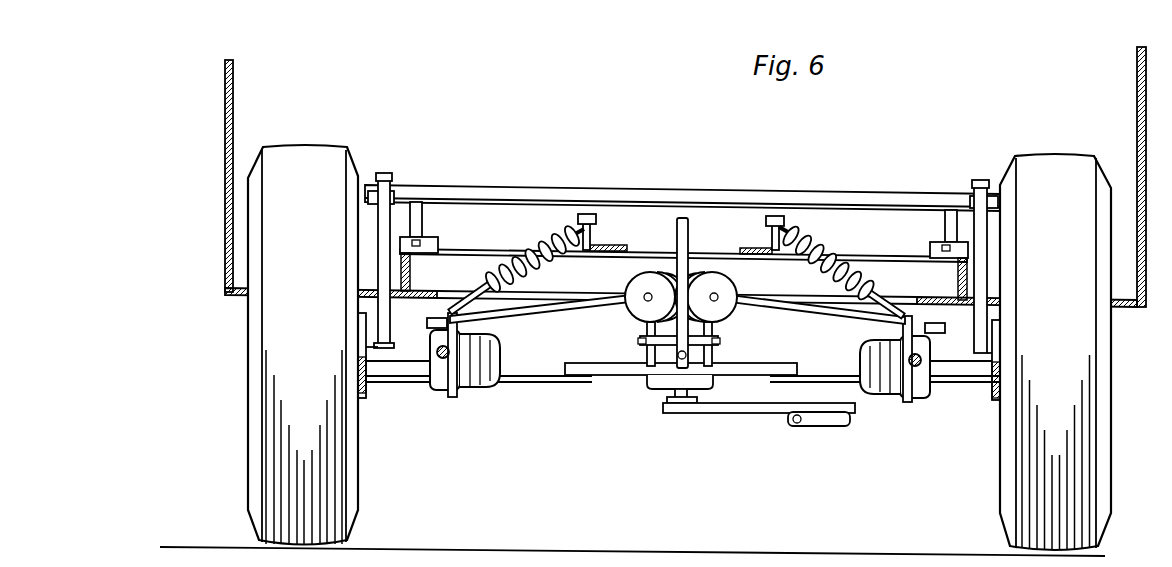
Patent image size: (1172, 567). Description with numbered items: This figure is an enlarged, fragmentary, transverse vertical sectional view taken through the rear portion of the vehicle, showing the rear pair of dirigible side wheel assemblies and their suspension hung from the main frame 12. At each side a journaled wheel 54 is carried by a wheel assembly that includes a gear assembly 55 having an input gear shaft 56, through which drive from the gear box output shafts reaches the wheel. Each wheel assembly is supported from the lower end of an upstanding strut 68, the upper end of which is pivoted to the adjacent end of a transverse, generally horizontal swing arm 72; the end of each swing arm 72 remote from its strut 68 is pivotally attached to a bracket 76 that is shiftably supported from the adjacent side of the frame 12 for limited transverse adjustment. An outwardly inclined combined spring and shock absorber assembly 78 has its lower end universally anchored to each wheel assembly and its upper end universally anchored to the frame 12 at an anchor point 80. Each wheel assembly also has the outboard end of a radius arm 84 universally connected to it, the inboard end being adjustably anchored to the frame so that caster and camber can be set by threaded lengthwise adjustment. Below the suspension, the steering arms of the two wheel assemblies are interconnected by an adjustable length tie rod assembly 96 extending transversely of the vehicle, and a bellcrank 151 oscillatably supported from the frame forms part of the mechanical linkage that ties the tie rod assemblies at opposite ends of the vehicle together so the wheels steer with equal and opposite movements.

The main frame 12 is at (700, 267).
The wheel 54 is at (337, 483).
The gear assembly 55 is at (447, 397).
The input gear shaft 56 is at (432, 370).
The upstanding strut 68 is at (378, 257).
The swing arm 72 is at (645, 203).
The bracket 76 is at (436, 240).
The combined spring and shock absorber assembly 78 is at (520, 248).
The upper anchor of spring and shock absorber assembly 80 is at (582, 222).
The radius arm 84 is at (530, 318).
The tie rod assembly 96 is at (620, 368).
The bellcrank 151 is at (735, 410).